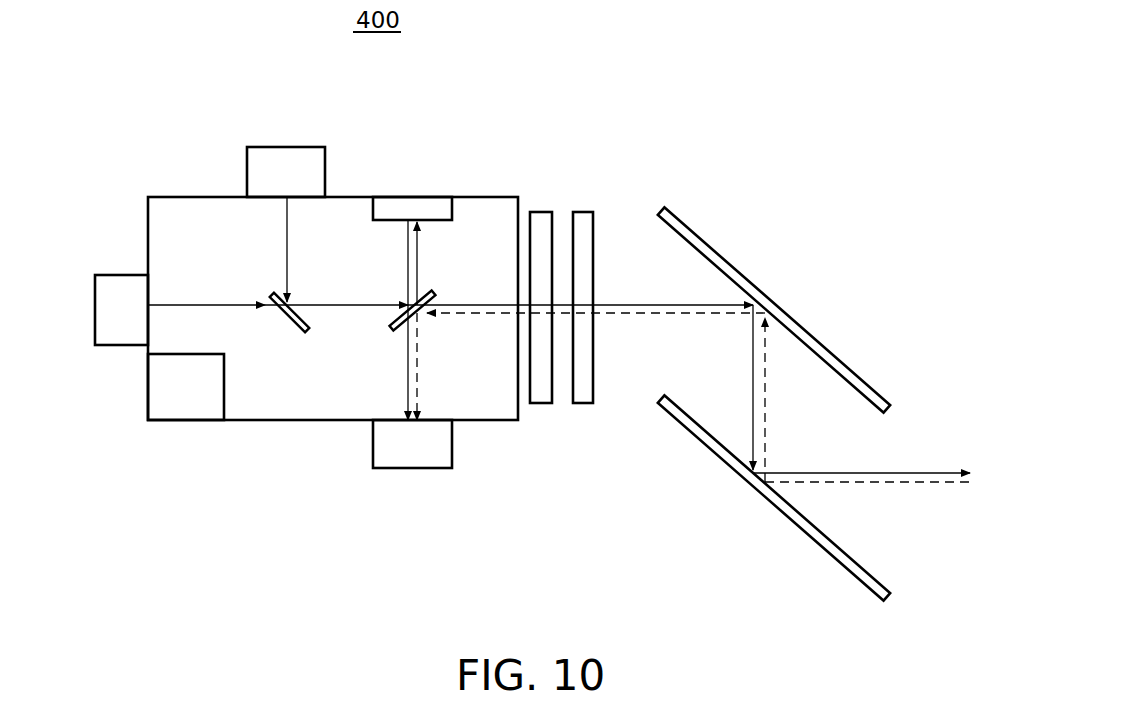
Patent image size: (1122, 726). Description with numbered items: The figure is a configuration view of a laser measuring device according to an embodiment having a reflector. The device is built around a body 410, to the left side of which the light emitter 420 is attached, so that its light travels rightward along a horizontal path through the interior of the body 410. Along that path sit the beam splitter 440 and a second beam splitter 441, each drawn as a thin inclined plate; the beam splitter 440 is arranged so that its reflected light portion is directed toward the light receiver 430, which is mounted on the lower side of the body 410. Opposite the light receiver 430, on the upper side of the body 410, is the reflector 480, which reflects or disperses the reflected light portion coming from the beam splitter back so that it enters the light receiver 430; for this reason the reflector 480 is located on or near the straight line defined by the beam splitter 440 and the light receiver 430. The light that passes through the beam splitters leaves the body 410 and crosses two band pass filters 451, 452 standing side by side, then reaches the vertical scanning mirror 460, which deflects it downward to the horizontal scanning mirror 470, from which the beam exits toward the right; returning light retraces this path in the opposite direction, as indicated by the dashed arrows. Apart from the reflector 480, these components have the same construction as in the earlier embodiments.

The body 410 is at (470, 197).
The light emitter 420 is at (115, 273).
The light receiver 430 is at (420, 468).
The beam splitter 440 is at (281, 325).
The beam splitter 441 is at (428, 295).
The optical plate 451 is at (540, 212).
The optical plate 452 is at (582, 212).
The vertical scanning mirror 460 is at (740, 268).
The horizontal scanning mirror 470 is at (705, 448).
The reflector 480 is at (373, 207).